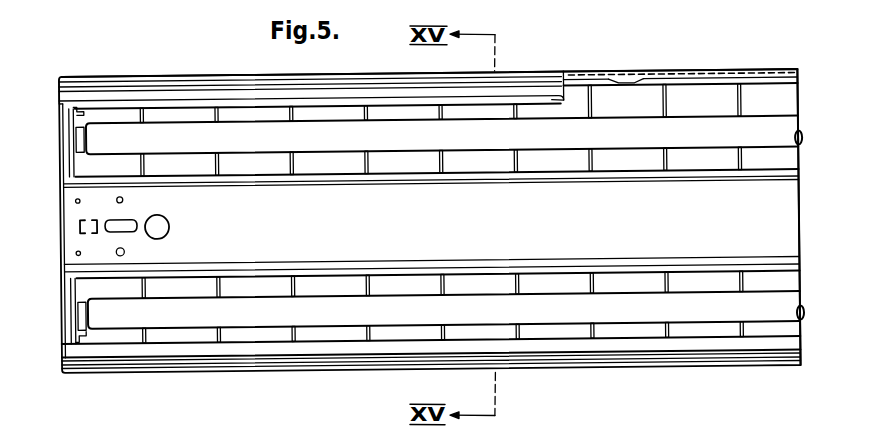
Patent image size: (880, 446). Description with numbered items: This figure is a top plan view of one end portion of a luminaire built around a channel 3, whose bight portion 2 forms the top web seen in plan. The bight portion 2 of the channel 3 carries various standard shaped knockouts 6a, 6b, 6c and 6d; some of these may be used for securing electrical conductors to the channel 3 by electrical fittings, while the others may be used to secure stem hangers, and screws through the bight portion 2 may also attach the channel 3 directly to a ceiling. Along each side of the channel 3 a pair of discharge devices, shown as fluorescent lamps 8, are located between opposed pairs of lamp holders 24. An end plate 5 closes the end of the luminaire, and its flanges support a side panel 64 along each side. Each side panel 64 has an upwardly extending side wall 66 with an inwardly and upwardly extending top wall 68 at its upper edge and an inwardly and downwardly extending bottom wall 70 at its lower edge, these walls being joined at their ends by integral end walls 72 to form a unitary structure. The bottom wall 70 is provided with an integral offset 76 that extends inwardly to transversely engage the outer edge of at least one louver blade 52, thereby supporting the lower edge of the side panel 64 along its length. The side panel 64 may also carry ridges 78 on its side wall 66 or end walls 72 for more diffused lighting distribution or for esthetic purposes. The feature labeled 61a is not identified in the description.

The bight portion 2 is at (633, 197).
The channel 3 is at (793, 222).
The end plate 5 is at (60, 229).
The knockout 6a is at (123, 197).
The knockout 6b is at (80, 195).
The knockout 6c is at (127, 227).
The knockout 6d is at (97, 216).
The fluorescent lamp 8 is at (354, 146).
The lamp holder 24 is at (74, 149).
The louver blade 52 is at (223, 115).
The aperture 61a is at (170, 217).
The side panel 64 is at (586, 114).
The side wall 66 is at (572, 80).
The top wall 68 is at (384, 98).
The bottom wall 70 is at (616, 84).
The end wall 72 is at (61, 97).
The offset 76 is at (699, 77).
The ridge 78 is at (268, 86).